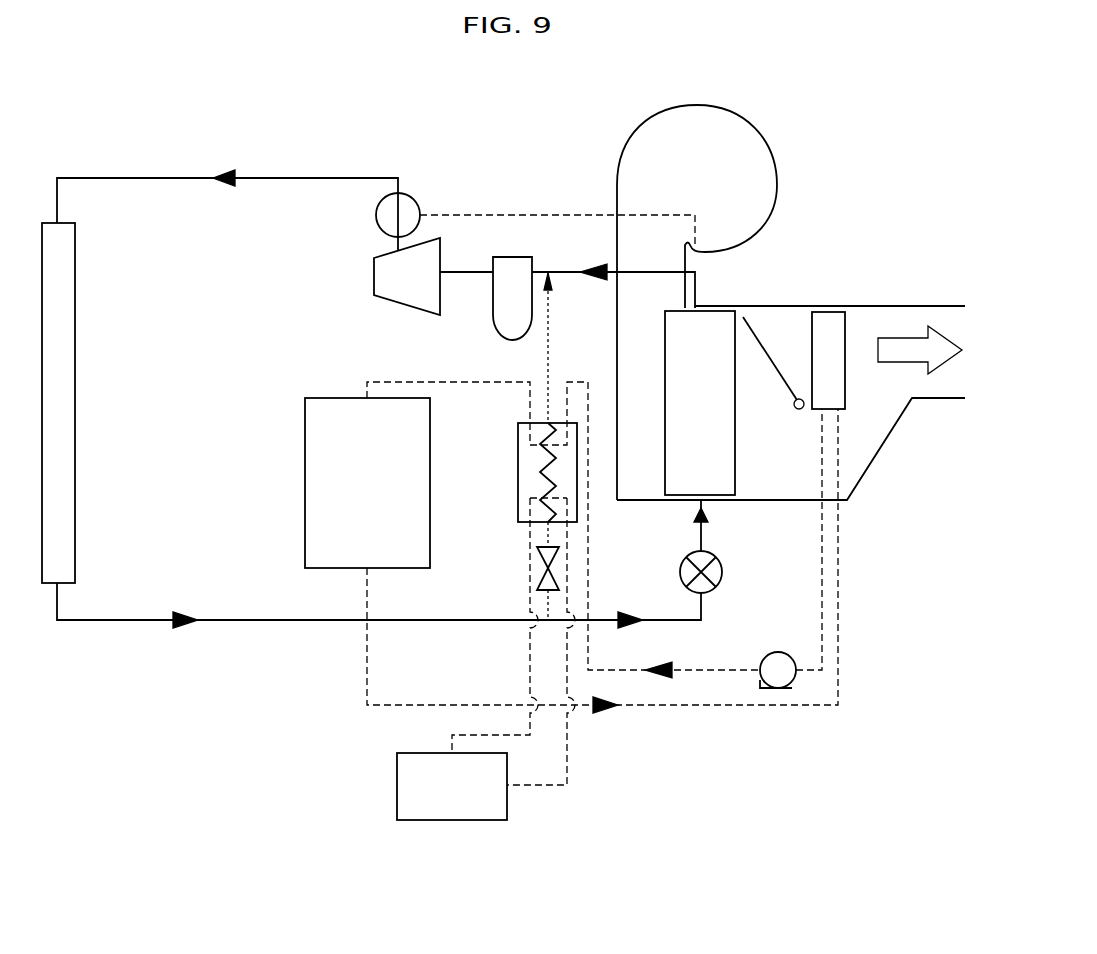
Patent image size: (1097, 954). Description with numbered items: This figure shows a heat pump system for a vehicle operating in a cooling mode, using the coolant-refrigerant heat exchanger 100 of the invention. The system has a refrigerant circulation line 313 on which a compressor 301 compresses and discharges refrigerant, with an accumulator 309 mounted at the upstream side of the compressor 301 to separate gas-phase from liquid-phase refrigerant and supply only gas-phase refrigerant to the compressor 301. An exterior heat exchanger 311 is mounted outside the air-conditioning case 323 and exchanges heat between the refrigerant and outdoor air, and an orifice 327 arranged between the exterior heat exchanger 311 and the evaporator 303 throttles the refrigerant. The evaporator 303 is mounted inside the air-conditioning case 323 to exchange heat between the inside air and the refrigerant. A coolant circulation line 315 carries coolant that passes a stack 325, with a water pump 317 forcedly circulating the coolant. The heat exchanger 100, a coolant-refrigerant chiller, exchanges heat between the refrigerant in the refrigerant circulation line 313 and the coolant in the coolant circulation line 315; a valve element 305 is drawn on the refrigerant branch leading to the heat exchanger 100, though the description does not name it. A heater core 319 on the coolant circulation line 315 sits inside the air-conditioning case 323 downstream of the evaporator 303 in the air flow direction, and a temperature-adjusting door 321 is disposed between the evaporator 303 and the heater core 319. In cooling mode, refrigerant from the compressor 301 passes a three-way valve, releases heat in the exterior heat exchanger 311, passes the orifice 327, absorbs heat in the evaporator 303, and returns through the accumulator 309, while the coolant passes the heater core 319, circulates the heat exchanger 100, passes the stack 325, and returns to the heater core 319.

The heat exchanger 100 is at (518, 473).
The compressor 301 is at (374, 276).
The evaporator 303 is at (717, 318).
The expansion valve 305 is at (557, 560).
The accumulator 309 is at (493, 313).
The exterior heat exchanger 311 is at (75, 407).
The refrigerant circulation line 313 is at (210, 622).
The coolant circulation line 315 is at (637, 710).
The water pump 317 is at (797, 686).
The heater core 319 is at (840, 383).
The temperature-adjusting door 321 is at (770, 358).
The air-conditioning case 323 is at (900, 304).
The stack 325 is at (305, 487).
The orifice 327 is at (723, 572).